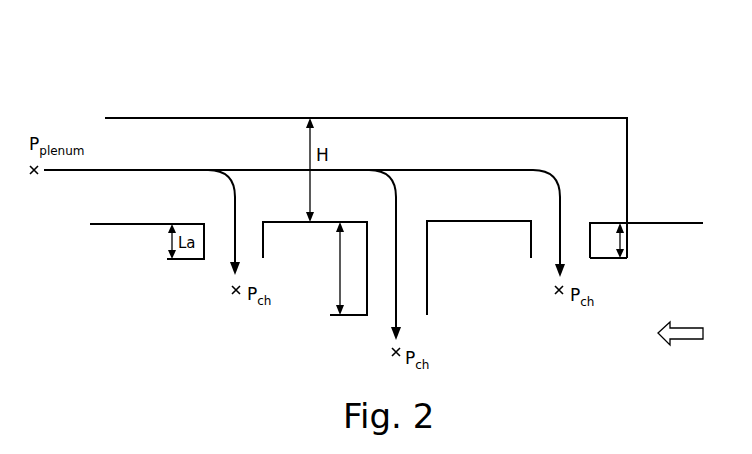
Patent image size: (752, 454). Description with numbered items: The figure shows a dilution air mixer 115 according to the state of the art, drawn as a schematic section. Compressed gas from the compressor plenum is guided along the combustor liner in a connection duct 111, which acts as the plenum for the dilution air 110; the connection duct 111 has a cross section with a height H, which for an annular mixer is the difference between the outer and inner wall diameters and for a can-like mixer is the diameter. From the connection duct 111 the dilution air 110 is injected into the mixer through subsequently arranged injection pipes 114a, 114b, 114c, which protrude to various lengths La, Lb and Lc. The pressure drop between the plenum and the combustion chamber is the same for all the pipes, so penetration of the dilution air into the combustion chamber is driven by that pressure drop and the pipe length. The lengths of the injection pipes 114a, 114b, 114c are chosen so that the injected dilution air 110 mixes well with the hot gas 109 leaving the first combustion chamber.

The hot gas 109 is at (657, 331).
The dilution air 110 is at (85, 172).
The connection duct 111 is at (220, 128).
The injection pipe 114a is at (253, 235).
The injection pipe 114b is at (410, 273).
The injection pipe 114c is at (583, 260).
The dilution air mixer 115 is at (470, 92).